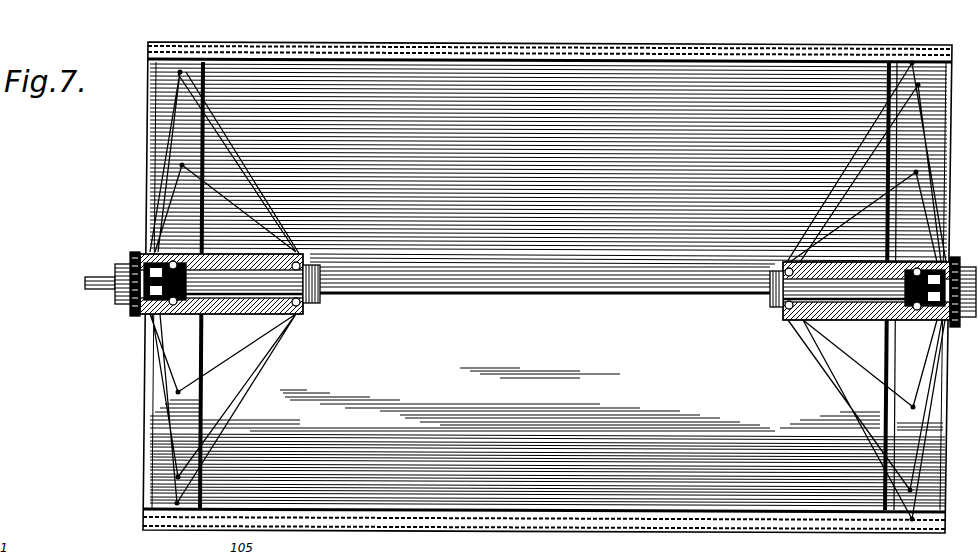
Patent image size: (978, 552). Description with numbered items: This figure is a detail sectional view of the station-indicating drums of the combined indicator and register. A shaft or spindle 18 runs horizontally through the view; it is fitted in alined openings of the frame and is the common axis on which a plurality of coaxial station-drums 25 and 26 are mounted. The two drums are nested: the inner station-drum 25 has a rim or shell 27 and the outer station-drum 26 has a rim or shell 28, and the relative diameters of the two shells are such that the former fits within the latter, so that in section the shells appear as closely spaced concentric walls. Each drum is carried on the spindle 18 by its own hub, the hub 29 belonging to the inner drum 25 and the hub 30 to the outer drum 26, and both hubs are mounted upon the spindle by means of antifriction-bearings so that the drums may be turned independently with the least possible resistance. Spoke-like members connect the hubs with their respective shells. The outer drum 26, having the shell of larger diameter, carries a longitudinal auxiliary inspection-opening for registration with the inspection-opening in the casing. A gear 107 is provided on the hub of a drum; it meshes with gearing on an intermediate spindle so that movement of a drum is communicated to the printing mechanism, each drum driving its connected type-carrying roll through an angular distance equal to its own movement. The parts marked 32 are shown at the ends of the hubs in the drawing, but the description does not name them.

The shaft or spindle 18 is at (85, 283).
The station-drum 25 is at (160, 145).
The station-drum 26 is at (944, 142).
The rim or shell 27 is at (404, 33).
The rim or shell 28 is at (560, 44).
The hub 29 is at (218, 256).
The hub 30 is at (855, 314).
The flange 32 is at (134, 318).
The gear 107 is at (127, 299).